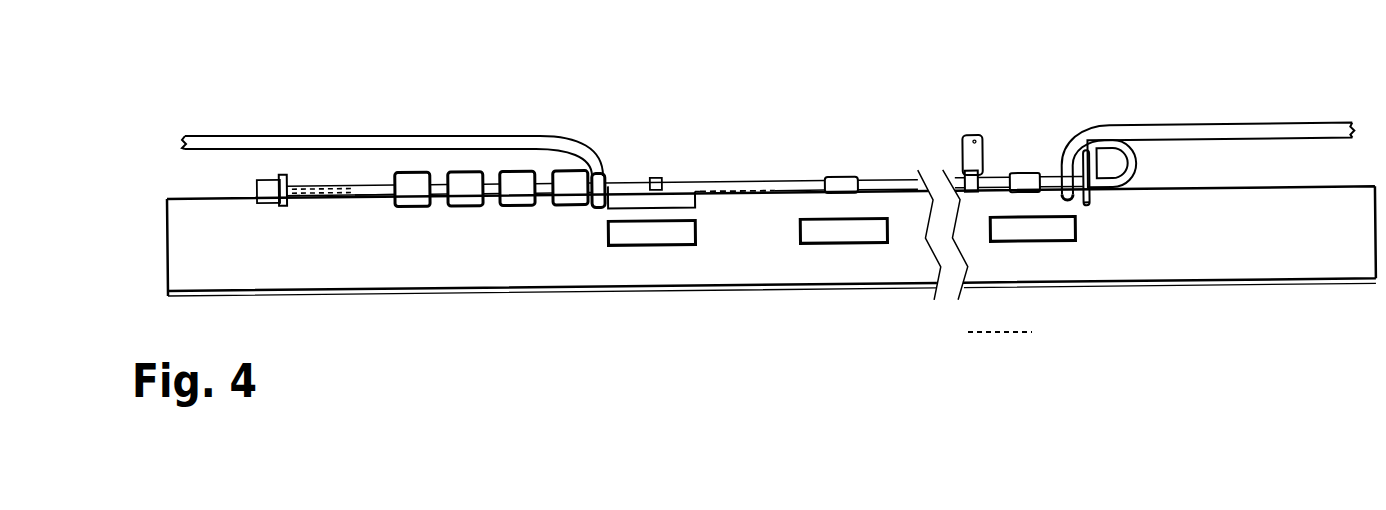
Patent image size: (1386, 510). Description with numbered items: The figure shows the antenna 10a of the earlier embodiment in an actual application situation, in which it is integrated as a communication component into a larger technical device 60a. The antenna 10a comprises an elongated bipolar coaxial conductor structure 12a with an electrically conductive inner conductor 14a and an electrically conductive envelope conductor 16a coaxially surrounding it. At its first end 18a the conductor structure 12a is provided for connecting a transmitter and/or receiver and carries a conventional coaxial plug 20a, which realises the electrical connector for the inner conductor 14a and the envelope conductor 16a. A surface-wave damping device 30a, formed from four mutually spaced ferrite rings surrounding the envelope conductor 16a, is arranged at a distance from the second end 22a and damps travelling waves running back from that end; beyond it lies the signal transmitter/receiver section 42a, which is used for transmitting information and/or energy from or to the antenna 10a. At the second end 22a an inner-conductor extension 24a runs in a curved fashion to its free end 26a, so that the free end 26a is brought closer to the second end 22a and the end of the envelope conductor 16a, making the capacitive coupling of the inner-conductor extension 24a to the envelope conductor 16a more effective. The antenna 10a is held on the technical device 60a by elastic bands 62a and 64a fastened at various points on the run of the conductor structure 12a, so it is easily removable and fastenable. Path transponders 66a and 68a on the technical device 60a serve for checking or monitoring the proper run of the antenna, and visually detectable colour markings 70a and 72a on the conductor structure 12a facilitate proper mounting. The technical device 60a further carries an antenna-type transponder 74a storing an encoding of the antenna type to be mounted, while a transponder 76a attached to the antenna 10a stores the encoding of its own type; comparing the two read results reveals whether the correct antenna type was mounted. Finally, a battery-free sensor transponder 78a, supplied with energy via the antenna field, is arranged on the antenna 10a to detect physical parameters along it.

The antenna 10a is at (768, 85).
The coaxial conductor structure 12a is at (690, 150).
The inner conductor 14a is at (323, 190).
The envelope conductor 16a is at (360, 198).
The first end 18a is at (294, 204).
The coaxial plug 20a is at (257, 186).
The second end 22a is at (1097, 192).
The inner-conductor extension 24a is at (1140, 160).
The free end 26a is at (1092, 212).
The surface-wave damping device 30a is at (476, 221).
The signal transmitter/receiver section 42a is at (763, 210).
The technical device 60a is at (558, 265).
The elastic band 62a is at (375, 142).
The elastic band 64a is at (1195, 132).
The path transponder 66a is at (839, 230).
The path transponder 68a is at (1023, 227).
The colour marking 70a is at (843, 185).
The colour marking 72a is at (1022, 182).
The antenna-type transponder 74a is at (647, 228).
The transponder 76a is at (633, 200).
The sensor transponder 78a is at (965, 155).